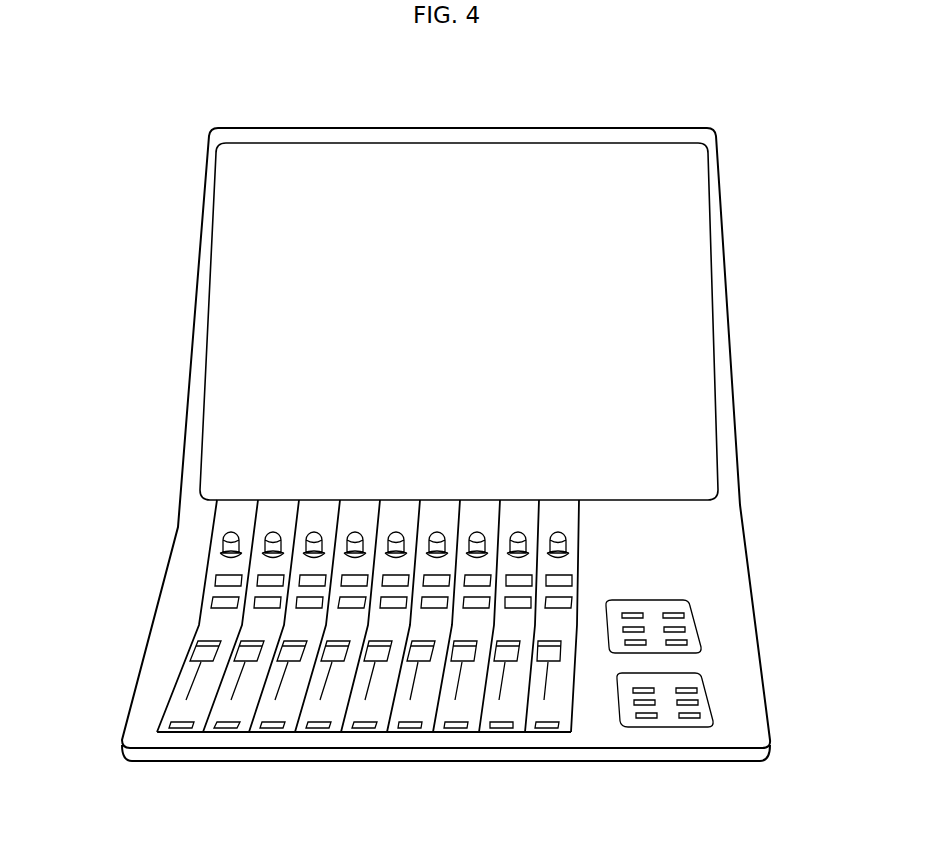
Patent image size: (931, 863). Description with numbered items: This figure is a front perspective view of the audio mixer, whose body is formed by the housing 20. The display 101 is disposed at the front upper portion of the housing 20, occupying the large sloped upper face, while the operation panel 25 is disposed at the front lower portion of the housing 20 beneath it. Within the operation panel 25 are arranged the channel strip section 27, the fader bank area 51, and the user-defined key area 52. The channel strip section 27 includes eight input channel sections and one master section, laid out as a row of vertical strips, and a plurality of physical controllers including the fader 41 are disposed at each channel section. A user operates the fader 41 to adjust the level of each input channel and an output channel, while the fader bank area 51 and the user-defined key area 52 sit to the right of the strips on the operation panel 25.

The housing 20 is at (723, 268).
The display 101 is at (412, 160).
The operation panel 25 is at (117, 502).
The fader 41 is at (197, 650).
The fader bank area 51 is at (695, 622).
The user-defined key area 52 is at (712, 700).
The channel strip section 27 is at (572, 763).